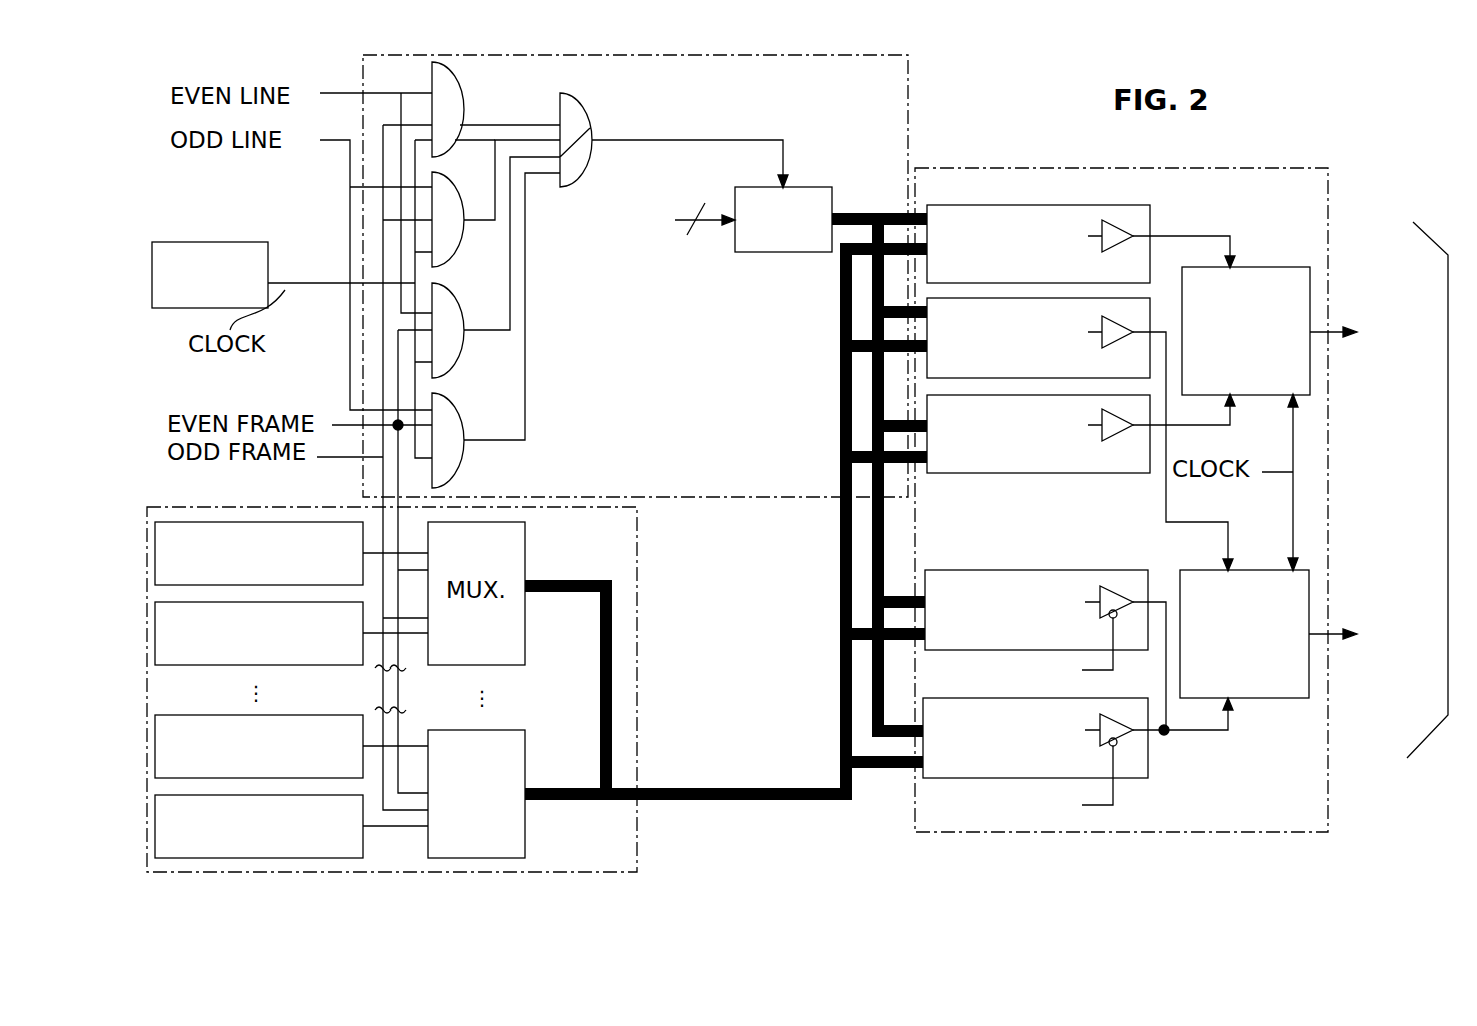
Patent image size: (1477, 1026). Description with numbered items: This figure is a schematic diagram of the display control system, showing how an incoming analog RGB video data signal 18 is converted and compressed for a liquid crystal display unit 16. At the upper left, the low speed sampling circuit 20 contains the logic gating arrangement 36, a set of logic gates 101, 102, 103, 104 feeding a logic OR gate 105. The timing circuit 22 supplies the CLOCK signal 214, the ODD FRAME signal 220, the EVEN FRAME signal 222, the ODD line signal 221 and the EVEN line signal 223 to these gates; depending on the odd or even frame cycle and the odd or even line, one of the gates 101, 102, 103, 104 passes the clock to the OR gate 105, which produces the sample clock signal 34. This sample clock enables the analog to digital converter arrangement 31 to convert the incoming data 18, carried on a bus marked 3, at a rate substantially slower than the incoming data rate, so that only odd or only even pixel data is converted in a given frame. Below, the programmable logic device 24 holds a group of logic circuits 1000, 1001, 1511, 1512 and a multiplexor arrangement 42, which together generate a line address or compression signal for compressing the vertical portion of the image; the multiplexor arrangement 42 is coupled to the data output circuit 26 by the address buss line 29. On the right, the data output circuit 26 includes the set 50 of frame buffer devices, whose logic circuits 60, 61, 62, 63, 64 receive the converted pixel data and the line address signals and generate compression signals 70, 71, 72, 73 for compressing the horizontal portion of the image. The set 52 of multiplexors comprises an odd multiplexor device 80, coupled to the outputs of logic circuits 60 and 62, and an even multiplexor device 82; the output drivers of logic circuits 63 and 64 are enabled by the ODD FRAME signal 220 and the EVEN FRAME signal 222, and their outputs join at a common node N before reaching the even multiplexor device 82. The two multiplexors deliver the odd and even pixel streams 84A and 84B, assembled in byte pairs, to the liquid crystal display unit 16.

The low speed sampling circuit 20 is at (908, 91).
The programmable logic device 24 is at (637, 618).
The set of frame buffer devices 50 is at (1180, 802).
The timing circuit 22 is at (178, 310).
The CLOCK signal 214 is at (310, 286).
The ODD FRAME signal 220 is at (337, 458).
The ODD line signal 221 is at (337, 142).
The EVEN FRAME signal 222 is at (333, 424).
The EVEN line signal 223 is at (337, 92).
The logic gate 101 is at (458, 77).
The logic gate 102 is at (464, 190).
The logic gate 103 is at (458, 298).
The logic gate 104 is at (456, 423).
The logic OR gate 105 is at (583, 107).
The logic gating arrangement 36 is at (720, 104).
The sample clock signal 34 is at (785, 163).
The analog to digital converter arrangement 31 is at (772, 255).
The analog RGB video data signal 18 is at (675, 225).
The incoming data bus slash 3 is at (694, 235).
The address buss line 29 is at (727, 803).
The logic circuit 1000 is at (178, 522).
The logic circuit 1001 is at (225, 666).
The logic circuit 1511 is at (285, 714).
The logic circuit 1512 is at (347, 858).
The multiplexor arrangement 42 is at (545, 846).
The logic circuit 60 is at (1003, 205).
The logic circuit 61 is at (1150, 320).
The logic circuit 62 is at (1090, 478).
The logic circuit 63 is at (955, 570).
The logic circuit 64 is at (1140, 778).
The set of multiplexors 52 is at (1243, 222).
The compression signal 71 is at (1197, 525).
The compression signal 72 is at (1210, 427).
The compression signal 73 is at (1210, 731).
The common node N is at (1165, 735).
The compression signal 70 is at (1237, 246).
The odd multiplexor device 80 is at (1291, 264).
The even multiplexor device 82 is at (1280, 700).
The first output pixel stream 84A is at (1348, 340).
The second output pixel stream 84B is at (1345, 620).
The data output circuit 26 is at (1425, 735).
The liquid crystal display unit 16 is at (1377, 847).